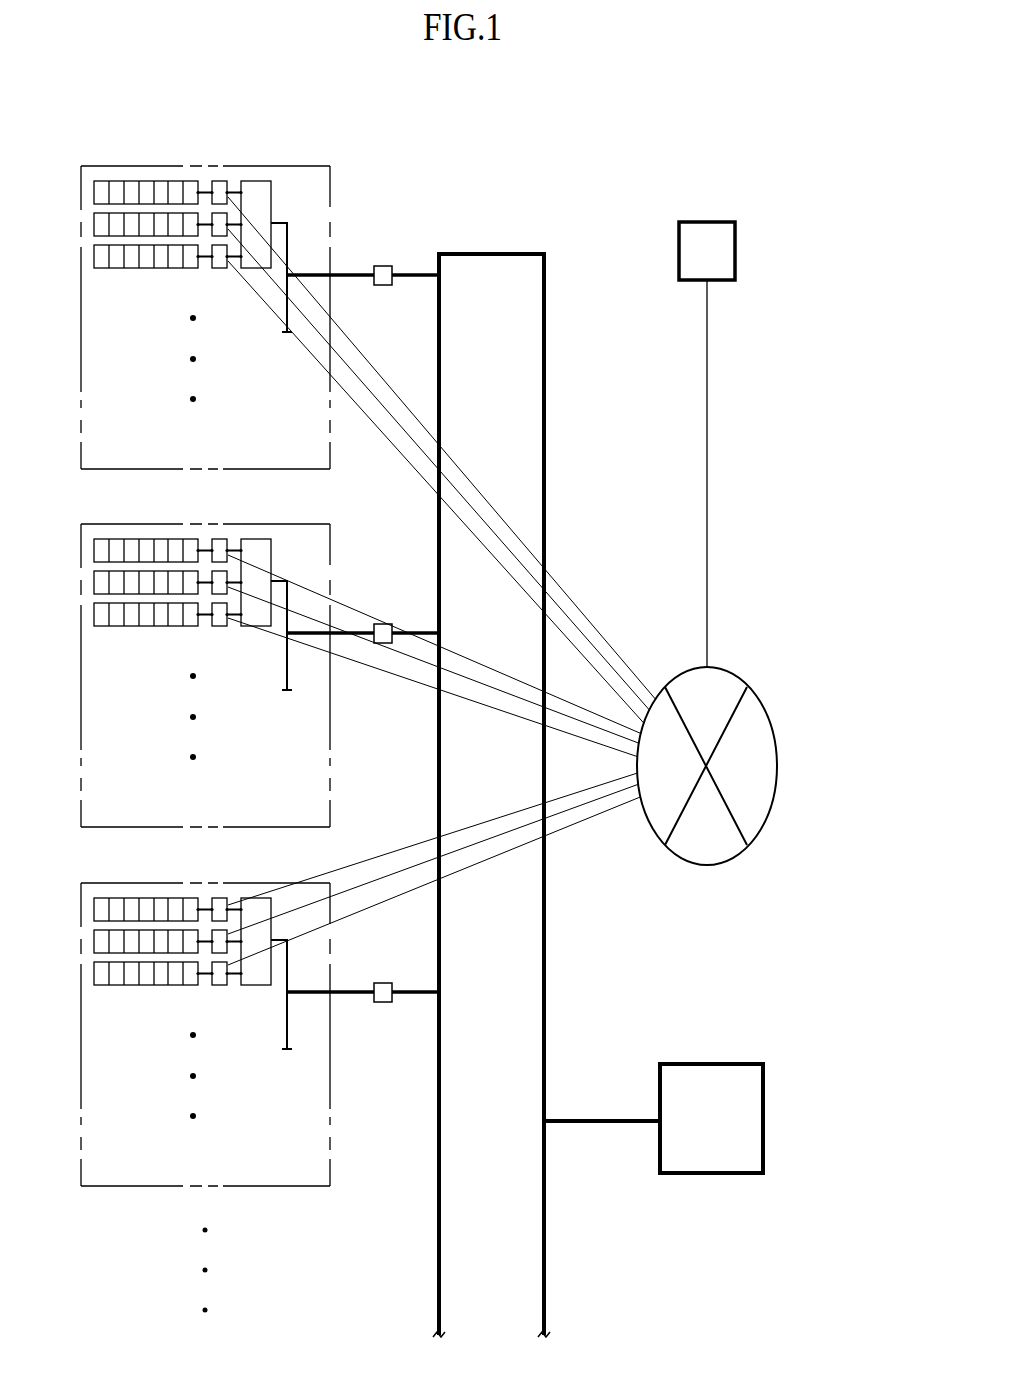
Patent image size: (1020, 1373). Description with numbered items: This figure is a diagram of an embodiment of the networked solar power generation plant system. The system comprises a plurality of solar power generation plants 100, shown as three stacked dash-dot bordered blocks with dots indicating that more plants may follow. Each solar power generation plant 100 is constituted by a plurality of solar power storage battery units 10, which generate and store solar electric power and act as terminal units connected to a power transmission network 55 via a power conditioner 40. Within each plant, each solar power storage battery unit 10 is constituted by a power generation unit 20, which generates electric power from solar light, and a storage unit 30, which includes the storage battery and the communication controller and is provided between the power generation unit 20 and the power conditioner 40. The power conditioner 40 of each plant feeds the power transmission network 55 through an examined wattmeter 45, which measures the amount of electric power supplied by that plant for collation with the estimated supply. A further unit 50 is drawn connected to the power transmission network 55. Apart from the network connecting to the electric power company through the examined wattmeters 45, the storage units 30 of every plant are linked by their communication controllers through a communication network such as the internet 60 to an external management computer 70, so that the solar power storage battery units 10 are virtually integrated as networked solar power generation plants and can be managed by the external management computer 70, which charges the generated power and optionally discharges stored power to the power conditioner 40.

The solar power storage battery unit 10 is at (160, 514).
The power generation unit 20 is at (146, 183).
The storage unit 30 is at (219, 182).
The power conditioner 40 is at (255, 183).
The examined wattmeter 45 is at (383, 265).
The controller 50 is at (713, 1175).
The power transmission network 55 is at (492, 253).
The internet 60 is at (740, 675).
The external management computer 70 is at (707, 221).
The solar power generation plant 100 is at (291, 166).